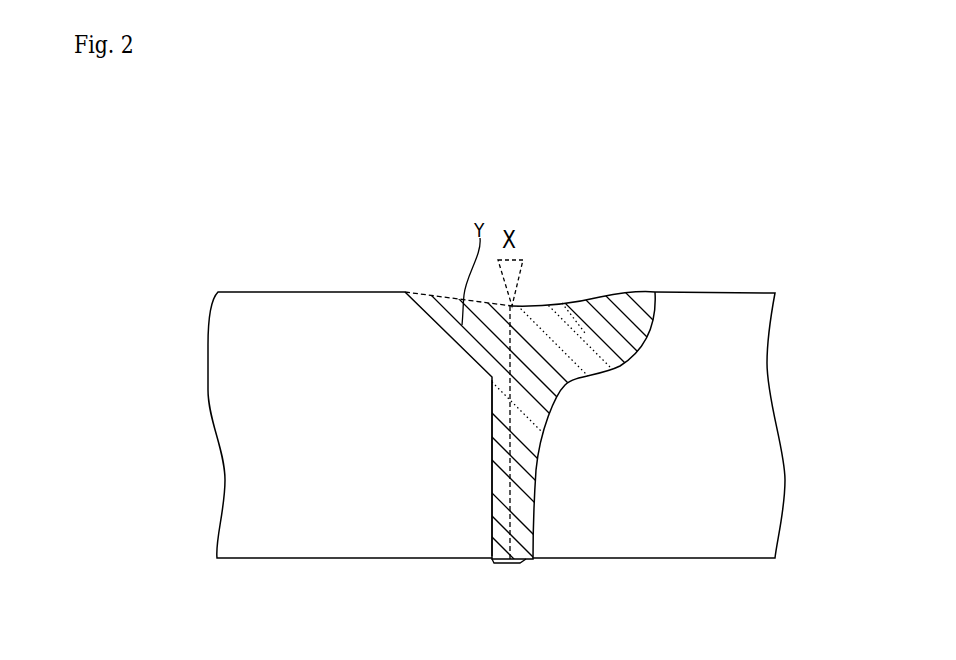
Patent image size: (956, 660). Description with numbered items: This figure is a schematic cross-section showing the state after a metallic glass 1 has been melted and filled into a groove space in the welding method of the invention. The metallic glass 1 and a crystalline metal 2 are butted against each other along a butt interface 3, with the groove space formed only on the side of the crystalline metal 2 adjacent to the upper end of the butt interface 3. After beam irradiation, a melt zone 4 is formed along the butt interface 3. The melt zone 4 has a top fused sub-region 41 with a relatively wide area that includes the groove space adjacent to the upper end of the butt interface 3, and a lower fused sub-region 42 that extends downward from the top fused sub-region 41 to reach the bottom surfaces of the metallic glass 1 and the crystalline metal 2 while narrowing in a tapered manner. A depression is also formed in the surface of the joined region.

The metallic glass 1 is at (682, 292).
The crystalline metal 2 is at (317, 291).
The butt interface 3 is at (492, 453).
The melt zone 4 is at (613, 291).
The top fused sub-region 41 is at (561, 301).
The lower fused sub-region 42 is at (525, 559).